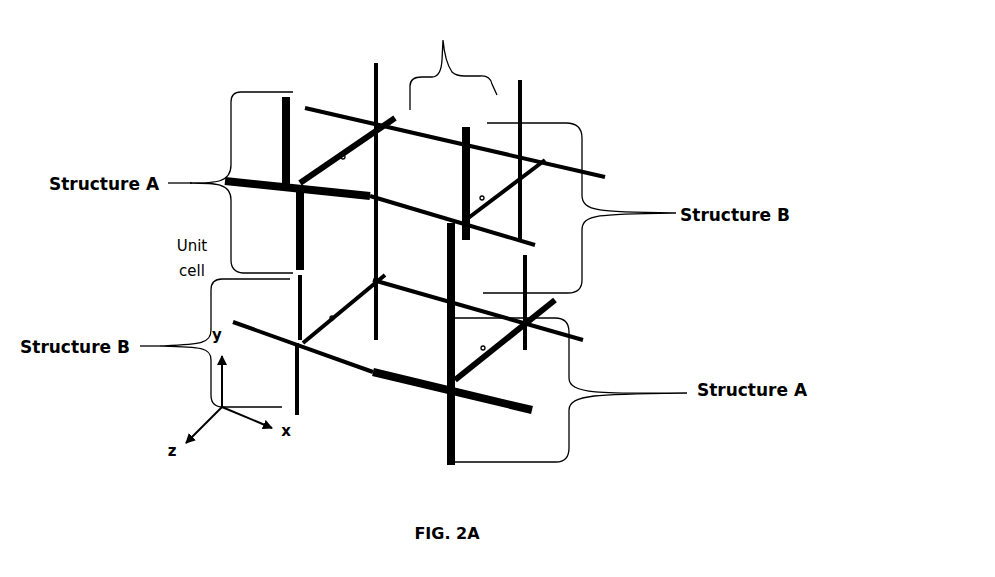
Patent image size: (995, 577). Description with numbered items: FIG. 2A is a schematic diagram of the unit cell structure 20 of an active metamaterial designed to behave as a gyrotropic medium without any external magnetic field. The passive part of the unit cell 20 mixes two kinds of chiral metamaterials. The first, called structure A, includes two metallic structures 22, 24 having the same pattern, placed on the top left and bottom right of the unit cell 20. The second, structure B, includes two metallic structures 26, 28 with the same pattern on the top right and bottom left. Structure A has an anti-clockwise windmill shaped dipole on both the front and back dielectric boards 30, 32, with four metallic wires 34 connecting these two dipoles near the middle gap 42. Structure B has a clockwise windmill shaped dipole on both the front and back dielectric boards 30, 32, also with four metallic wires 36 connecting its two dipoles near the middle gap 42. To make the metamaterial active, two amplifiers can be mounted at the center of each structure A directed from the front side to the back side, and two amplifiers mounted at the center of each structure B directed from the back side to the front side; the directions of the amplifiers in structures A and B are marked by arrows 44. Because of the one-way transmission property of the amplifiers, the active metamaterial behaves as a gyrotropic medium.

The unit cell structure 20 is at (98, 111).
The metallic structure 22 is at (280, 143).
The metallic structure 24 is at (250, 188).
The metallic structure 26 is at (462, 172).
The metallic structure 28 is at (403, 206).
The front dielectric board 30 is at (230, 92).
The back dielectric board 32 is at (601, 90).
The metallic wires 34 is at (311, 170).
The metallic wires 36 is at (527, 187).
The middle gap 42 is at (453, 60).
The arrows 44 is at (343, 156).